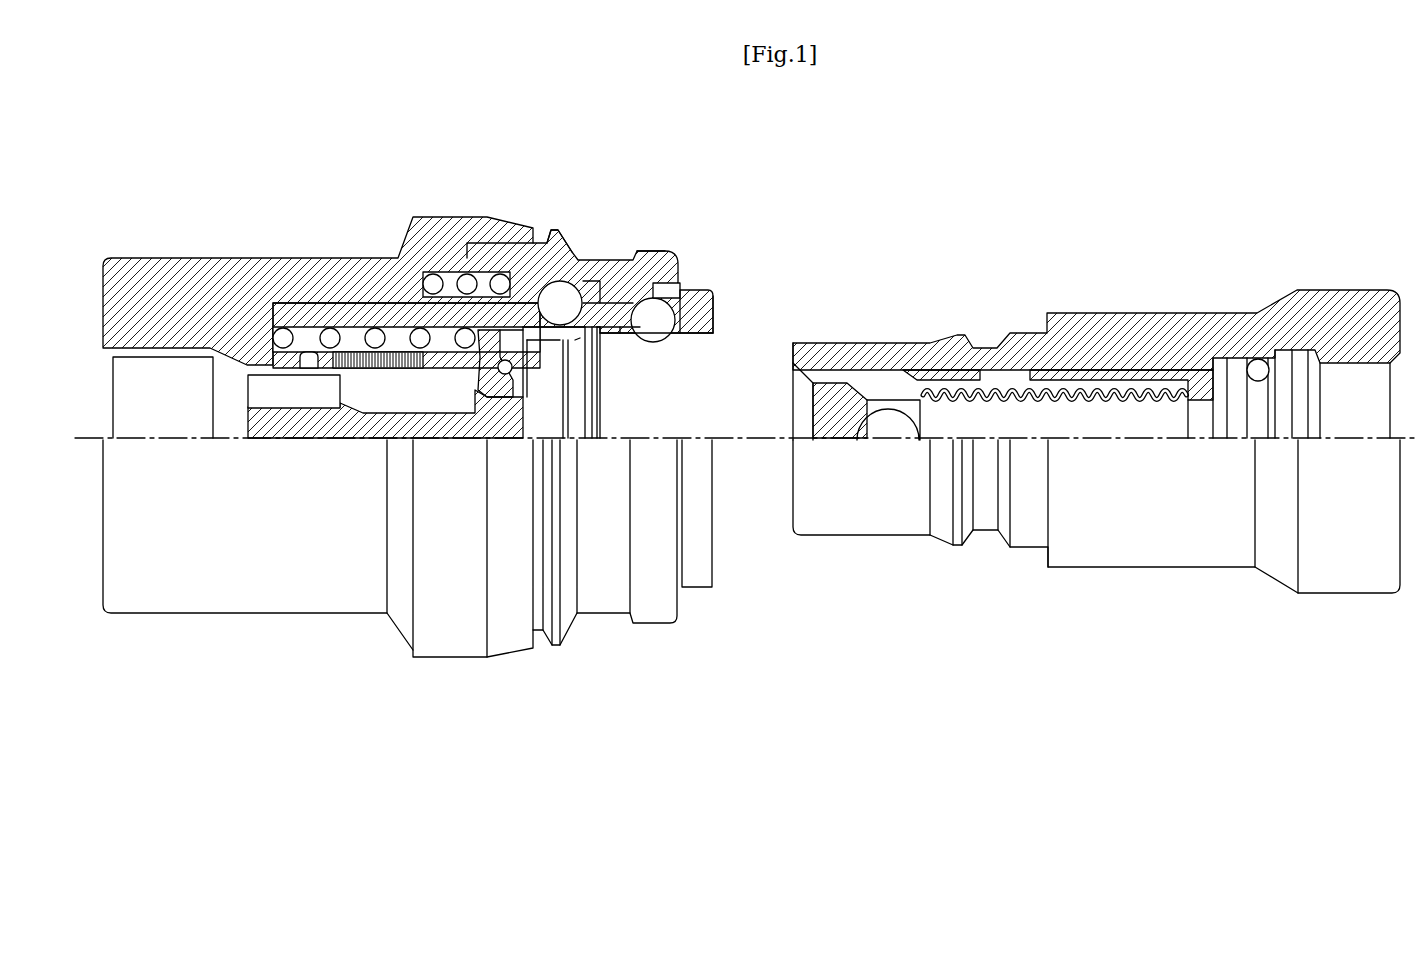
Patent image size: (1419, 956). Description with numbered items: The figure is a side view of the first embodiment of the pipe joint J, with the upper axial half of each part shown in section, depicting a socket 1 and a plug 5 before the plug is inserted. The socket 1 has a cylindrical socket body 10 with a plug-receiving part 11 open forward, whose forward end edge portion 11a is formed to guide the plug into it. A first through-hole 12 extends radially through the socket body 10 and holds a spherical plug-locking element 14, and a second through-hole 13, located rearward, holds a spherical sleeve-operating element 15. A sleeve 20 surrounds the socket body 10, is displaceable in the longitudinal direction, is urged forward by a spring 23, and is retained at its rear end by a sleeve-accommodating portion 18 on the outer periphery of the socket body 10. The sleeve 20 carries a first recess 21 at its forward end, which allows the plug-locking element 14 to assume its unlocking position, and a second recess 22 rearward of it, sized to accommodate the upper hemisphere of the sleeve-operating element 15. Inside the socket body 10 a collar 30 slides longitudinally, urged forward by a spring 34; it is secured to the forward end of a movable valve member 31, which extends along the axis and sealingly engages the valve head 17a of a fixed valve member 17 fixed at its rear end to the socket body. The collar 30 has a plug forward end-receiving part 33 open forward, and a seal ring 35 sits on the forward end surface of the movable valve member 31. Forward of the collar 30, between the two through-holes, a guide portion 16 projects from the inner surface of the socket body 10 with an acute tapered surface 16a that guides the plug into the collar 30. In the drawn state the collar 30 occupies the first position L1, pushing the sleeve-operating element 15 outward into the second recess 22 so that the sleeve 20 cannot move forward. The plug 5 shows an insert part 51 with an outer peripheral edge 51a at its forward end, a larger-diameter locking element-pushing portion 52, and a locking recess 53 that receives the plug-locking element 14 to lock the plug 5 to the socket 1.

The socket 1 is at (262, 255).
The plug 5 is at (1174, 310).
The socket body 10 is at (362, 316).
The plug-receiving part 11 is at (698, 352).
The forward end edge portion 11a is at (713, 306).
The first through-hole 12 is at (688, 292).
The second through-hole 13 is at (612, 300).
The plug-locking element 14 is at (660, 343).
The sleeve-operating element 15 is at (562, 300).
The guide portion 16 is at (593, 345).
The tapered surface 16a is at (610, 342).
The fixed valve member 17 is at (490, 395).
The valve head 17a is at (517, 332).
The sleeve-accommodating portion 18 is at (463, 228).
The sleeve 20 is at (545, 232).
The first recess 21 is at (664, 262).
The second recess 22 is at (596, 292).
The spring 23 is at (428, 267).
The collar 30 is at (560, 352).
The movable valve member 31 is at (482, 392).
The plug forward end-receiving part 33 is at (545, 348).
The spring 34 is at (323, 337).
The seal ring 35 is at (500, 378).
The insert part 51 is at (863, 342).
The outer peripheral edge 51a is at (797, 342).
The locking element-pushing portion 52 is at (960, 335).
The locking recess 53 is at (992, 346).
The first position L1 is at (583, 345).
The pipe joint J is at (1230, 162).